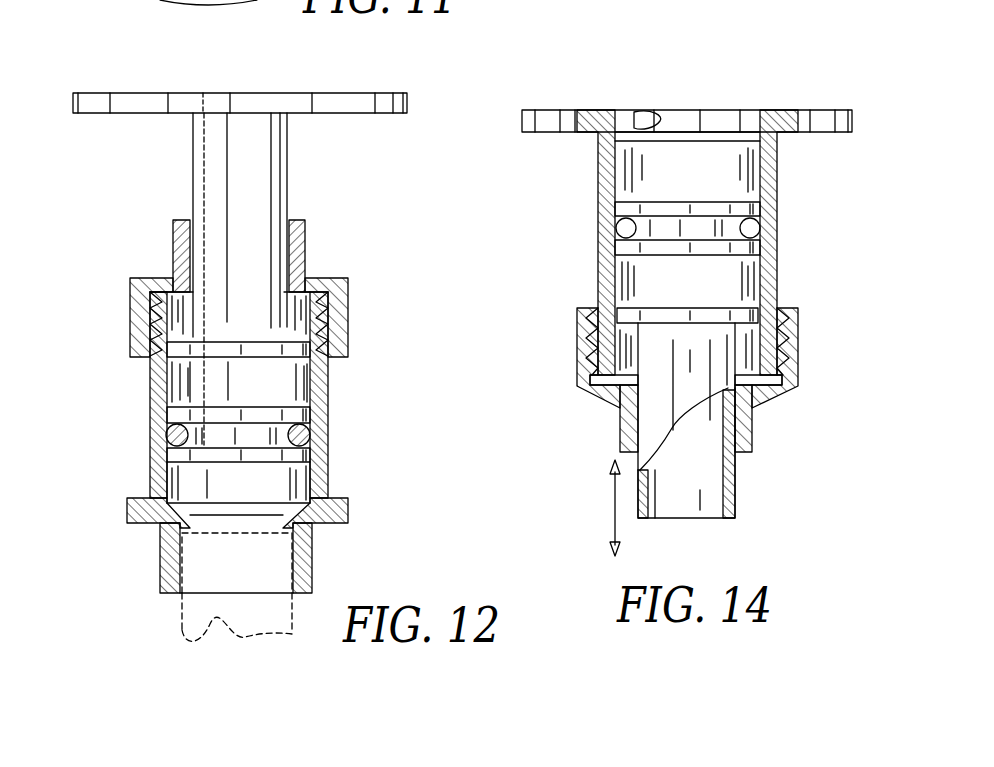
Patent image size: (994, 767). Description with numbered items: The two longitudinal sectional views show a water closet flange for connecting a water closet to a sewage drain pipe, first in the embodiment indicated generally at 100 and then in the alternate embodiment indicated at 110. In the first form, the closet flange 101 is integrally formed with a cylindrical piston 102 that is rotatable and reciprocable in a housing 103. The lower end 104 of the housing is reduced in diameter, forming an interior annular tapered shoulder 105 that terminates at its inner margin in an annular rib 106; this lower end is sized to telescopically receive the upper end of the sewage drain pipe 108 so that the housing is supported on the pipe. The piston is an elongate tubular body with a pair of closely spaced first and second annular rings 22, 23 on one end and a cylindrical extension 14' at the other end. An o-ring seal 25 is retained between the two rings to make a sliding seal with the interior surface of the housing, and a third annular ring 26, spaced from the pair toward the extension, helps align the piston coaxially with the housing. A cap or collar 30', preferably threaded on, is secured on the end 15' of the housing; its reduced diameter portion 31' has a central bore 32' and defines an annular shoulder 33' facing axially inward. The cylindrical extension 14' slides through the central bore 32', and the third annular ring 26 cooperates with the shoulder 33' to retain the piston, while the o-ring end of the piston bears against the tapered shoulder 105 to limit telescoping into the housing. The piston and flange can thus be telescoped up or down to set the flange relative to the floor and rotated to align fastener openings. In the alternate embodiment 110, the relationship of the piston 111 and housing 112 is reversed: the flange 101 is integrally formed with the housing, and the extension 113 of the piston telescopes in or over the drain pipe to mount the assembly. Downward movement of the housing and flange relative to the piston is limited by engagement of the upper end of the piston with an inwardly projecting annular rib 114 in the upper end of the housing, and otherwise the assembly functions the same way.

In FIG. 12, the closet flange 101 is at (130, 101).
In FIG. 14, the closet flange 101 is at (778, 115).
In FIG. 12, the cylindrical extension 14' is at (163, 279).
In FIG. 12, the cylindrical piston 102 is at (287, 183).
In FIG. 12, the central bore 32' is at (164, 255).
In FIG. 12, the reduced diameter portion 31' is at (344, 249).
In FIG. 12, the cap or collar 30' is at (282, 307).
In FIG. 14, the cap or collar 30' is at (641, 380).
In FIG. 12, the housing 103 is at (330, 386).
In FIG. 12, the end of the housing 15' is at (189, 276).
In FIG. 12, the annular shoulder 33' is at (239, 304).
In FIG. 12, the third annular ring 26 is at (220, 353).
In FIG. 12, the second annular ring 23 is at (175, 440).
In FIG. 12, the o-ring seal 25 is at (183, 452).
In FIG. 12, the first annular ring 22 is at (185, 465).
In FIG. 12, the interior annular tapered shoulder 105 is at (188, 511).
In FIG. 12, the water closet flange 100 is at (387, 514).
In FIG. 12, the lower end of the housing 104 is at (163, 568).
In FIG. 12, the annular rib 106 is at (258, 534).
In FIG. 12, the sewage drain pipe 108 is at (182, 618).
In FIG. 14, the inwardly projecting annular rib 114 is at (652, 112).
In FIG. 14, the housing 112 is at (596, 199).
In FIG. 14, the piston 111 is at (738, 478).
In FIG. 14, the extension of the piston 113 is at (735, 503).
In FIG. 14, the alternate embodiment of water closet flange 110 is at (566, 425).